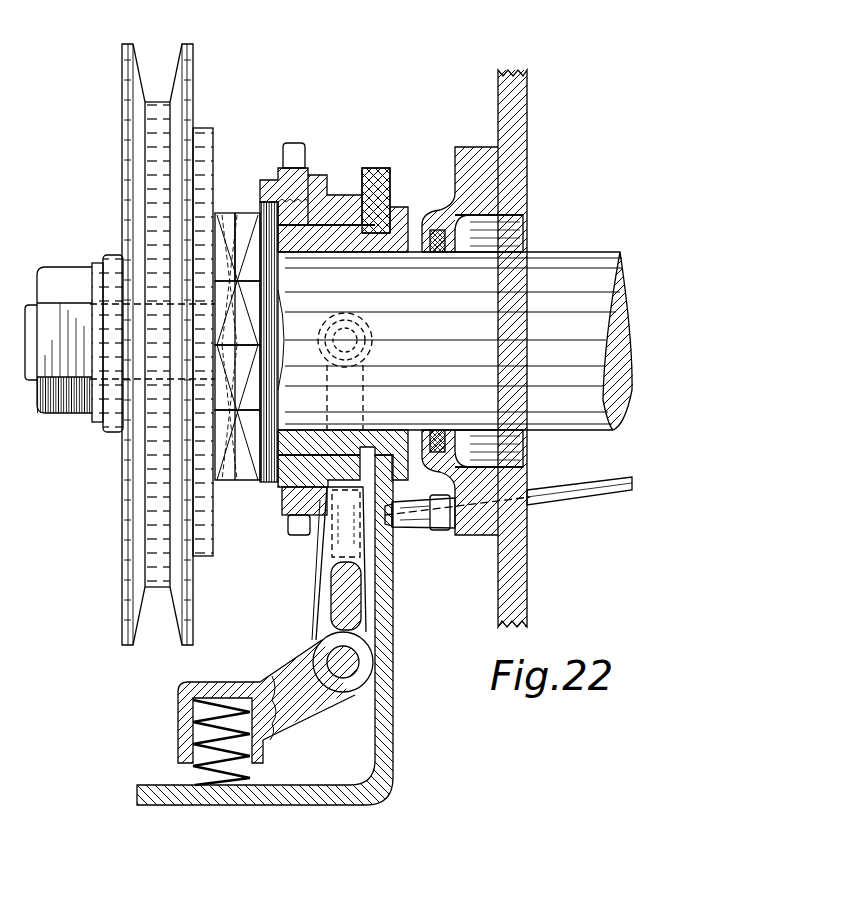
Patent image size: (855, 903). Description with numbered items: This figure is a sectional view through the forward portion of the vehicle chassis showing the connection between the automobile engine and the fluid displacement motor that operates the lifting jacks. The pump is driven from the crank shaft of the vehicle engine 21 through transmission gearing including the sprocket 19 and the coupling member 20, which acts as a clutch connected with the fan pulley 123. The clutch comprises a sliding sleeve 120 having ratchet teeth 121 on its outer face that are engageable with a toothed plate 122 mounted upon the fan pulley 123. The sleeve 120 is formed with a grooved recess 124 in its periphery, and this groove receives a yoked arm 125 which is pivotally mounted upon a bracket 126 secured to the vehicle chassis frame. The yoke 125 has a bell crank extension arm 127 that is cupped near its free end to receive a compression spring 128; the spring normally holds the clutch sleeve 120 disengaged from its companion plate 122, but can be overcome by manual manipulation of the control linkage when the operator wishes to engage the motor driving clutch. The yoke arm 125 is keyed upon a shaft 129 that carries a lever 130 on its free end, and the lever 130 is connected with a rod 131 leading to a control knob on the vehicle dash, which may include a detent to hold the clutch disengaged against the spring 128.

The sprocket 19 is at (295, 143).
The coupling member 20 is at (252, 463).
The vehicle engine 21 is at (515, 123).
The sliding sleeve 120 is at (363, 178).
The ratchet teeth 121 is at (247, 213).
The toothed plate 122 is at (212, 152).
The fan pulley 123 is at (193, 53).
The grooved recess 124 is at (327, 176).
The yoked arm 125 is at (327, 573).
The bracket 126 is at (365, 697).
The bell crank extension arm 127 is at (288, 675).
The compression spring 128 is at (180, 737).
The shaft 129 is at (380, 644).
The lever 130 is at (320, 613).
The rod 131 is at (600, 497).